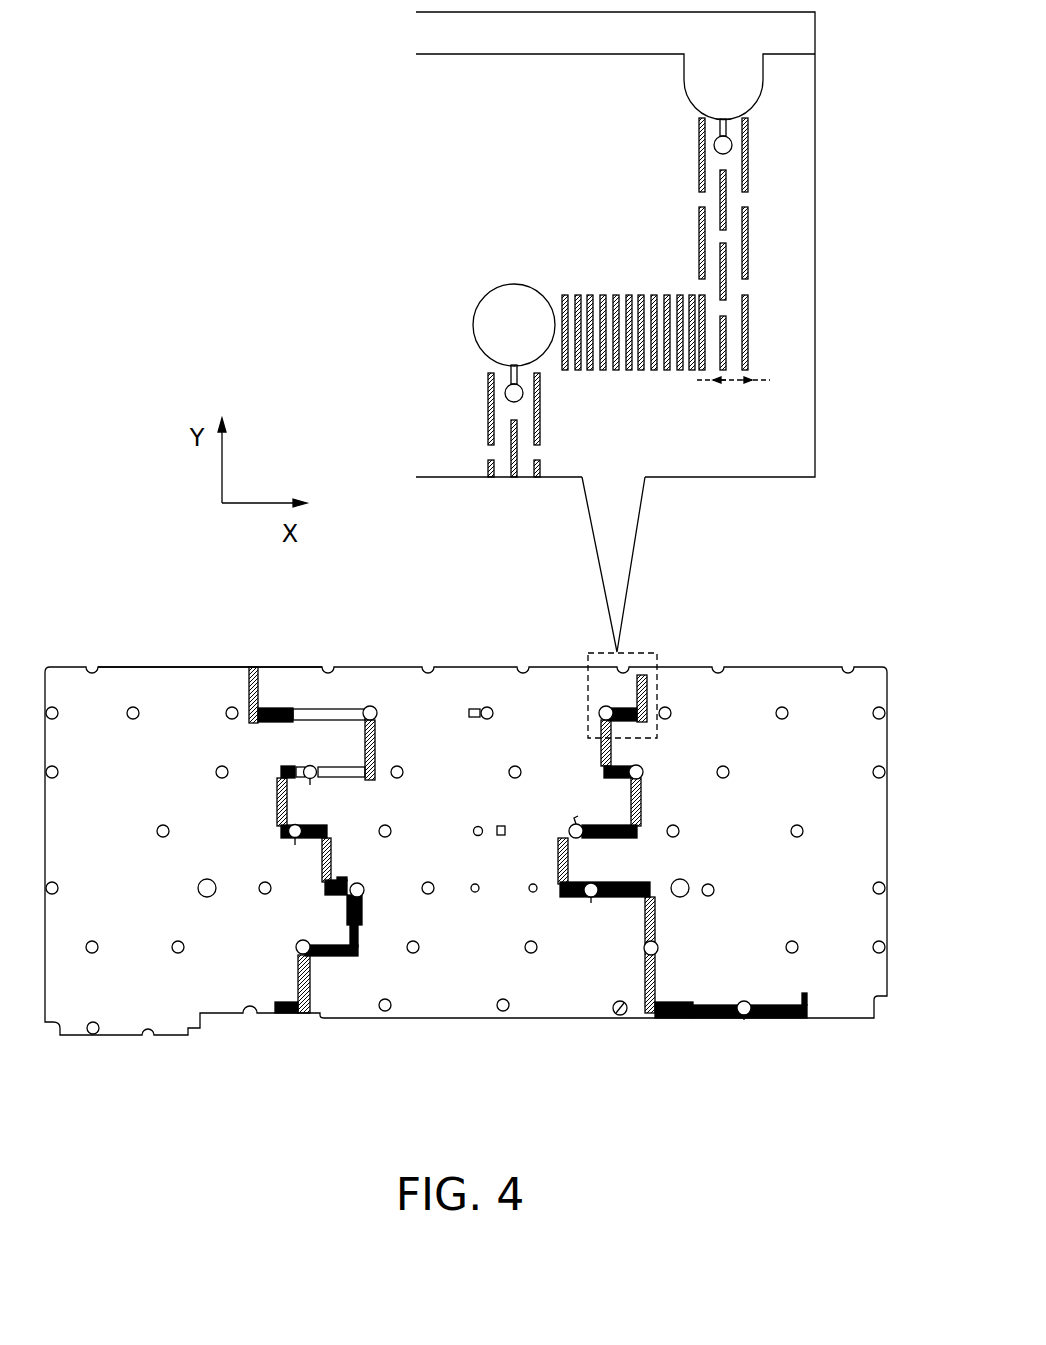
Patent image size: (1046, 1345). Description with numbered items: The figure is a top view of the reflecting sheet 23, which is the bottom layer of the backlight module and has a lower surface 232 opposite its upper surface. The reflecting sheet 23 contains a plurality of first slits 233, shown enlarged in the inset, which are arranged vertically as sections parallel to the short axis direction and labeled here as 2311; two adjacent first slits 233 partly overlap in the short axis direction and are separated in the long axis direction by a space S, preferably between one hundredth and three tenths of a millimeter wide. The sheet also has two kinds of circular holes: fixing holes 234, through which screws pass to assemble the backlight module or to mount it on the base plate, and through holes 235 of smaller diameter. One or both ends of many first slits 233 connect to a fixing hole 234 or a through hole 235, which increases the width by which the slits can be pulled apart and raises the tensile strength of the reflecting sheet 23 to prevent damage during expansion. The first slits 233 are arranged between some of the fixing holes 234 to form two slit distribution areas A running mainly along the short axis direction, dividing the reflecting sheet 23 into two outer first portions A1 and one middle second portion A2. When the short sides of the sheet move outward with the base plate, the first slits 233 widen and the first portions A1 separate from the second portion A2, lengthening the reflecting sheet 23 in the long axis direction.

The reflecting sheet 23 is at (437, 175).
The lower surface 232 is at (222, 680).
The first slits 233 is at (728, 130).
The strip portion of trace 2311 is at (700, 158).
The fixing holes 234 is at (747, 82).
The through holes 235 is at (732, 143).
The space S is at (733, 397).
The slit distribution area A is at (290, 1020).
The first portion A1 is at (124, 1020).
The second portion A2 is at (436, 1022).